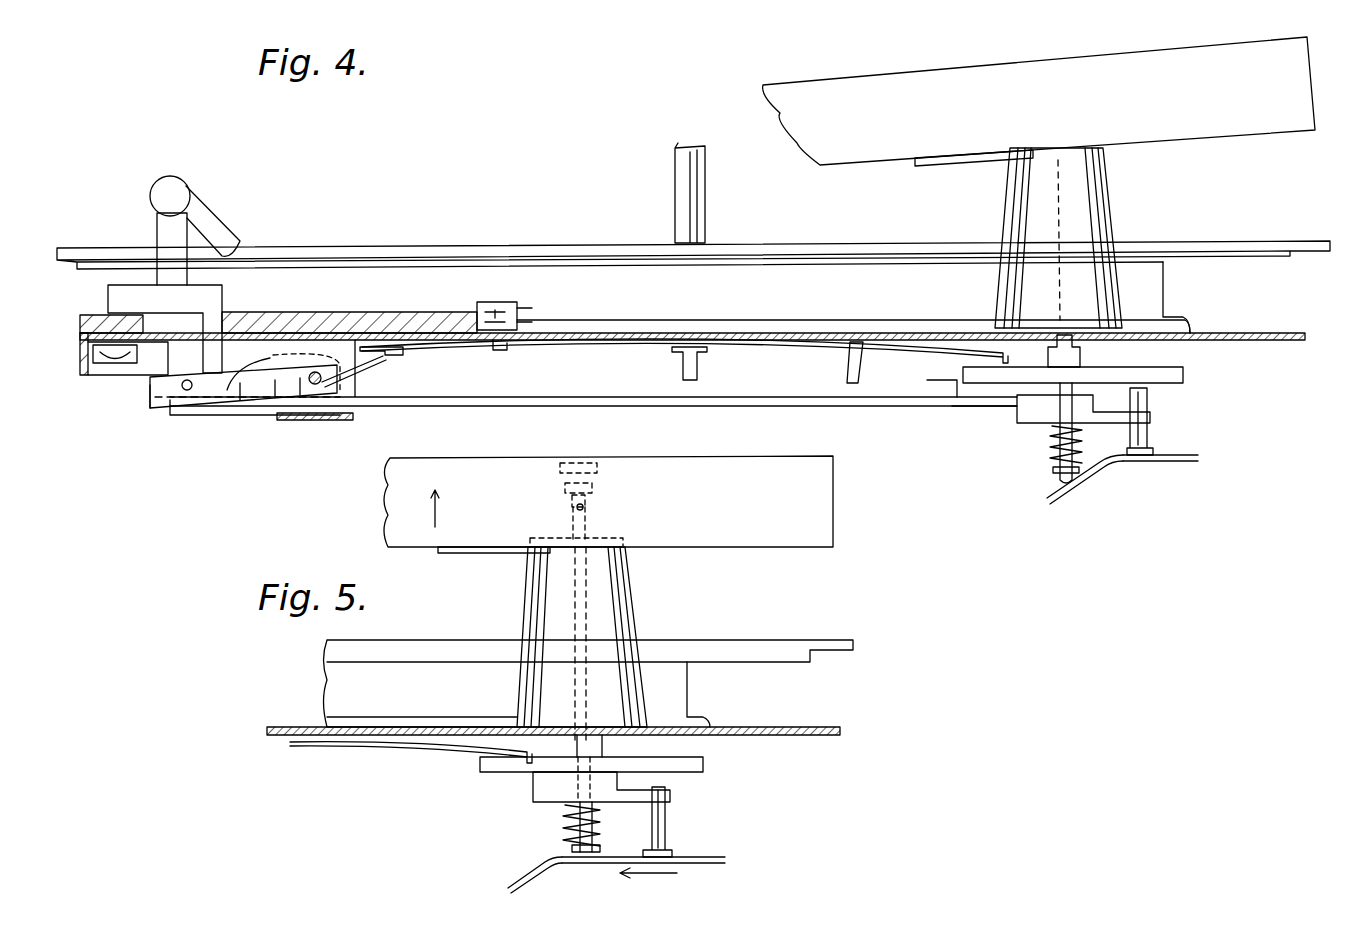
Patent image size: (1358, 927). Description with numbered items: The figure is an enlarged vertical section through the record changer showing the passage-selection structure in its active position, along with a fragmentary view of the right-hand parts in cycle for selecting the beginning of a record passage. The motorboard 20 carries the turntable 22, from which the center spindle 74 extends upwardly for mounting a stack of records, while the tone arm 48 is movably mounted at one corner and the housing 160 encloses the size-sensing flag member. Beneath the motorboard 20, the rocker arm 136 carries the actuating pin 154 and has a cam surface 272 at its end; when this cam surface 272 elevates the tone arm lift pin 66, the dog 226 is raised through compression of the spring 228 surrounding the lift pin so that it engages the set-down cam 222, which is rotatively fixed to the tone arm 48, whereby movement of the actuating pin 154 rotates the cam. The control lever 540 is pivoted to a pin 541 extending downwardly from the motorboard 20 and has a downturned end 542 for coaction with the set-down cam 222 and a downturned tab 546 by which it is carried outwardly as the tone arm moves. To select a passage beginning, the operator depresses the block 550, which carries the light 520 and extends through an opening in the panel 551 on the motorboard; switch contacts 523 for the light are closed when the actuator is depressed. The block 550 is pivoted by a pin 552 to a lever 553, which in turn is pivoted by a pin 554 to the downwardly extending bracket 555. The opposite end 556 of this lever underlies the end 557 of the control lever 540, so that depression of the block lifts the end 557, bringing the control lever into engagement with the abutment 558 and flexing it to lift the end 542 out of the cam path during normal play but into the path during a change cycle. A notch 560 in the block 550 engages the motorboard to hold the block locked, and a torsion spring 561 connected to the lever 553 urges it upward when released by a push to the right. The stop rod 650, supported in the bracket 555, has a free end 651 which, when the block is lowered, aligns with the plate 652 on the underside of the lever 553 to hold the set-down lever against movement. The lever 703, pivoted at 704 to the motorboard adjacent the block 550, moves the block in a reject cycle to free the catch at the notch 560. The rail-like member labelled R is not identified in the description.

In FIG. 4, the motorboard 20 is at (1275, 332).
In FIG. 5, the motorboard 20 is at (803, 727).
In FIG. 4, the turntable 22 is at (1147, 285).
In FIG. 5, the turntable 22 is at (670, 685).
In FIG. 4, the tone arm 48 is at (978, 60).
In FIG. 5, the tone arm 48 is at (722, 557).
In FIG. 4, the tone arm lift pin 66 is at (1055, 474).
In FIG. 5, the tone arm lift pin 66 is at (598, 846).
In FIG. 4, the center spindle 74 is at (705, 206).
In FIG. 4, the rocker arm 136 is at (1185, 465).
In FIG. 5, the rocker arm 136 is at (720, 856).
In FIG. 4, the actuating pin 154 is at (1148, 432).
In FIG. 5, the actuating pin 154 is at (665, 810).
In FIG. 4, the housing 160 is at (1100, 206).
In FIG. 5, the housing 160 is at (625, 626).
In FIG. 4, the set-down cam 222 is at (1183, 376).
In FIG. 5, the set-down cam 222 is at (703, 761).
In FIG. 4, the dog 226 is at (1017, 415).
In FIG. 5, the dog 226 is at (533, 788).
In FIG. 4, the spring 228 is at (1050, 455).
In FIG. 5, the spring 228 is at (563, 818).
In FIG. 4, the cam surface 272 is at (1070, 495).
In FIG. 5, the cam surface 272 is at (522, 880).
In FIG. 4, the light 520 is at (205, 187).
In FIG. 4, the switch contacts 523 is at (488, 302).
In FIG. 4, the control lever 540 is at (745, 352).
In FIG. 5, the control lever 540 is at (345, 752).
In FIG. 4, the pin 541 is at (683, 372).
In FIG. 4, the downturned end 542 is at (1033, 352).
In FIG. 4, the downturned tab 546 is at (852, 384).
In FIG. 4, the block 550 is at (108, 297).
In FIG. 4, the panel 551 is at (345, 312).
In FIG. 4, the pin 552 is at (175, 390).
In FIG. 4, the lever 553 is at (290, 400).
In FIG. 4, the pin 554 is at (318, 385).
In FIG. 4, the bracket 555 is at (345, 420).
In FIG. 4, the opposite end 556 is at (400, 364).
In FIG. 4, the end 557 is at (385, 356).
In FIG. 4, the abutment 558 is at (500, 352).
In FIG. 4, the notch 560 is at (230, 385).
In FIG. 4, the torsion spring 561 is at (285, 355).
In FIG. 4, the stop rod 650 is at (572, 402).
In FIG. 4, the free end 651 is at (210, 420).
In FIG. 4, the plate 652 is at (165, 412).
In FIG. 4, the lever 703 is at (80, 331).
In FIG. 4, the pivot 704 is at (115, 355).
In FIG. 4, the rail R is at (1256, 237).
In FIG. 5, the rail R is at (799, 634).